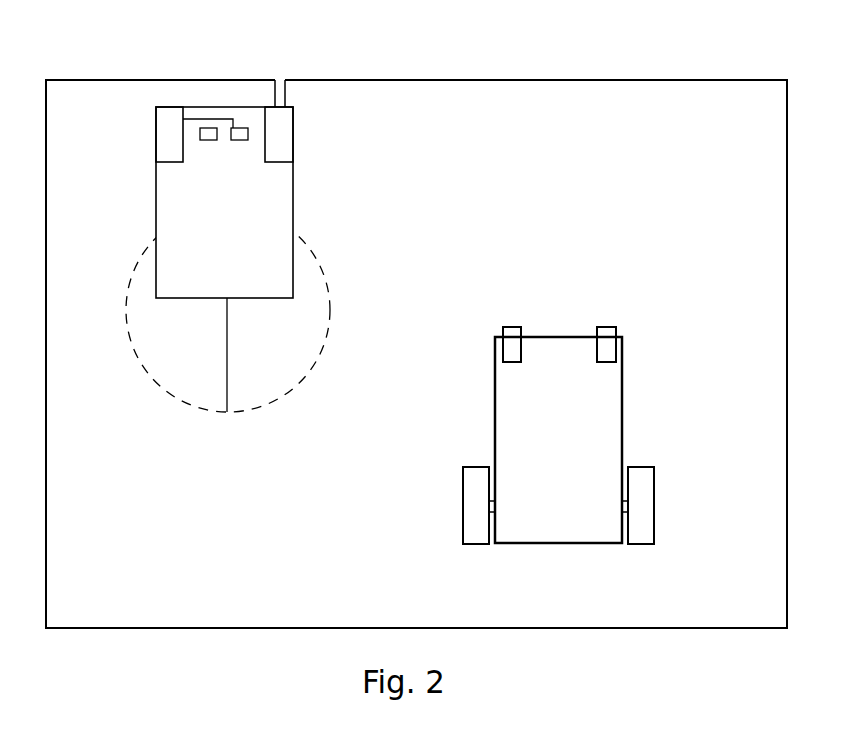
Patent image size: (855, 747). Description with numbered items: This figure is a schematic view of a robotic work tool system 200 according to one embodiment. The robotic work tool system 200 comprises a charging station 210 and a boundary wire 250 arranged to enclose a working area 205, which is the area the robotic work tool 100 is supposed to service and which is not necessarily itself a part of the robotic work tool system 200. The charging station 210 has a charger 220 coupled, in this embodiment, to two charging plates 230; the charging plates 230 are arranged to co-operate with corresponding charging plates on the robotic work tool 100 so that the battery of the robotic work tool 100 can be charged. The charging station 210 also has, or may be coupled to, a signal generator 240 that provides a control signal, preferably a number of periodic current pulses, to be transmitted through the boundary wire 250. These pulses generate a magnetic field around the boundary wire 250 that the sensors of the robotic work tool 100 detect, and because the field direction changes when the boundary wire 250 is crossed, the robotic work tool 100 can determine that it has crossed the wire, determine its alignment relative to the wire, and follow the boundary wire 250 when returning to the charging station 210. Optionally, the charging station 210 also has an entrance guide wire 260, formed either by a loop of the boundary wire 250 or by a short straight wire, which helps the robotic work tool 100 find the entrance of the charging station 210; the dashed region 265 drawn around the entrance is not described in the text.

The robotic work tool 100 is at (623, 427).
The robotic work tool system 200 is at (220, 242).
The working area 205 is at (416, 315).
The charging station 210 is at (156, 167).
The charger 220 is at (167, 117).
The charging plates 230 is at (210, 128).
The signal generator 240 is at (295, 145).
The boundary wire 250 is at (728, 80).
The entrance guide wire 260 is at (227, 390).
The range of motion 265 is at (130, 338).